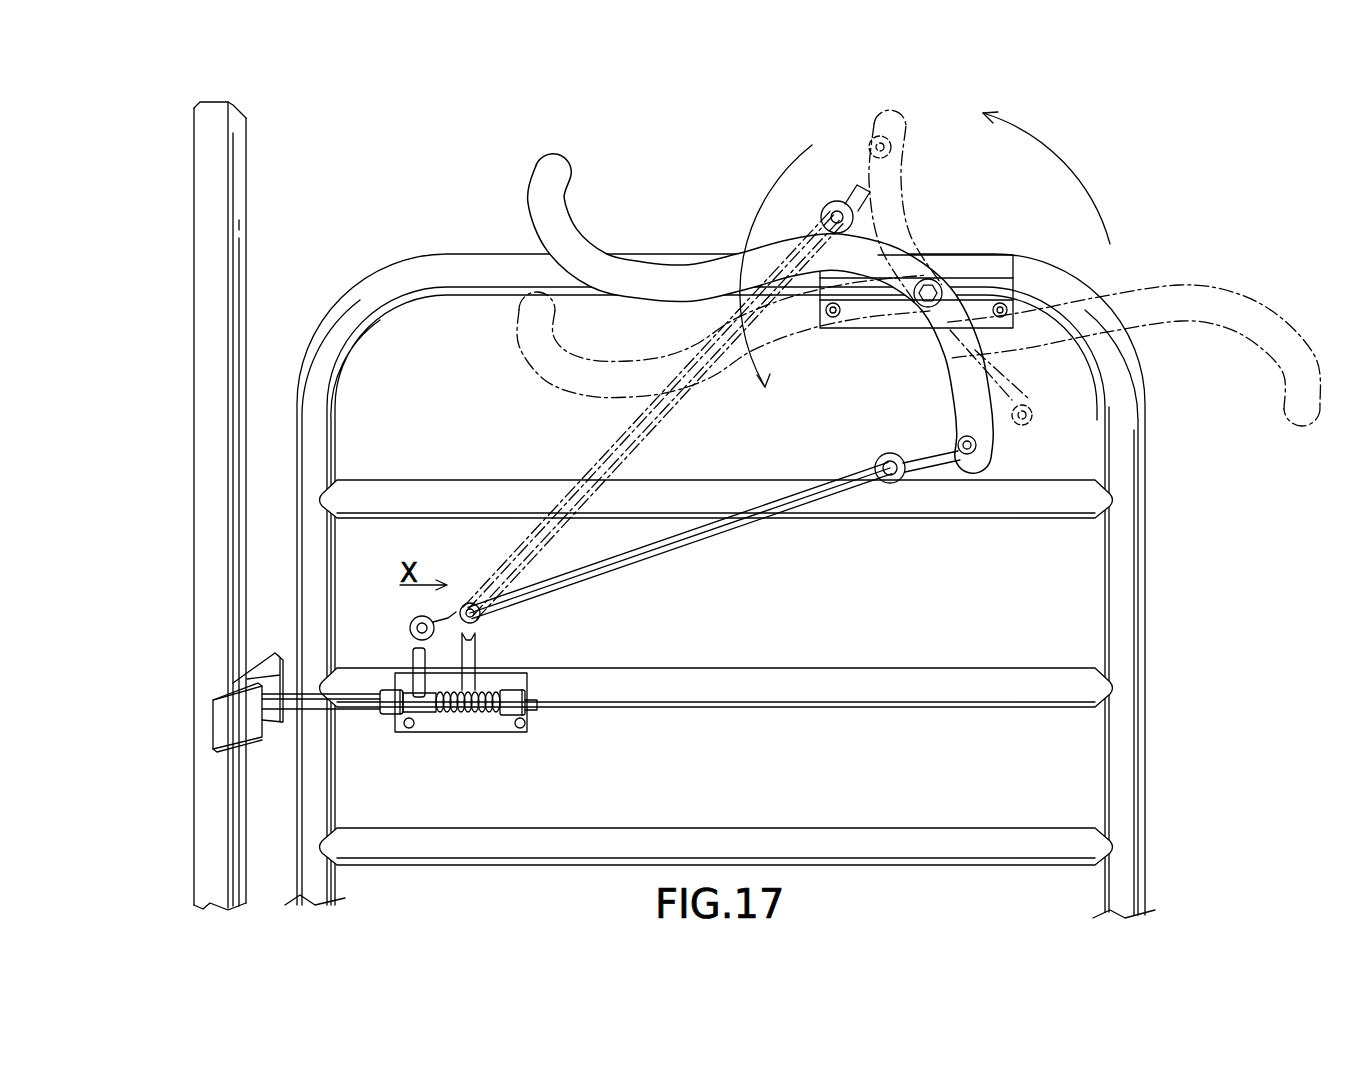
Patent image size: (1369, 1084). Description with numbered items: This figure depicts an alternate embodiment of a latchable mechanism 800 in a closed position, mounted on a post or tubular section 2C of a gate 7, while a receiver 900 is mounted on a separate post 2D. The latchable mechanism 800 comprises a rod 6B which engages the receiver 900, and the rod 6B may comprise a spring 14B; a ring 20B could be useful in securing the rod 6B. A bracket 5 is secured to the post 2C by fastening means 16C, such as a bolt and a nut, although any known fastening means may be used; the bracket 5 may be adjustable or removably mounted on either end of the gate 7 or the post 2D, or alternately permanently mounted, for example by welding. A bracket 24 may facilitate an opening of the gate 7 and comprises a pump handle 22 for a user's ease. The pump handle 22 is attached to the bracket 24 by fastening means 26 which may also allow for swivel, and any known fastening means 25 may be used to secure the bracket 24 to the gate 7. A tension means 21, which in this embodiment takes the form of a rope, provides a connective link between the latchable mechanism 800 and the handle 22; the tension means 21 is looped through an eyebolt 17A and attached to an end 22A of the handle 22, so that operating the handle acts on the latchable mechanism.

The post 2D is at (208, 391).
The gate 7 is at (1115, 610).
The post 2C is at (755, 672).
The receiver 900 is at (210, 727).
The rod 6B is at (311, 694).
The latchable mechanism 800 is at (505, 697).
The bracket 5 is at (443, 728).
The spring 14B is at (479, 710).
The fastening means 16C is at (527, 717).
The eyebolt 17A is at (412, 620).
The ring 20B is at (530, 692).
The tension means 21 is at (650, 556).
The pump handle 22 is at (575, 230).
The end 22A is at (905, 142).
The bracket 24 is at (965, 265).
The fastening means 25 is at (1003, 309).
The fastening means 26 is at (920, 305).